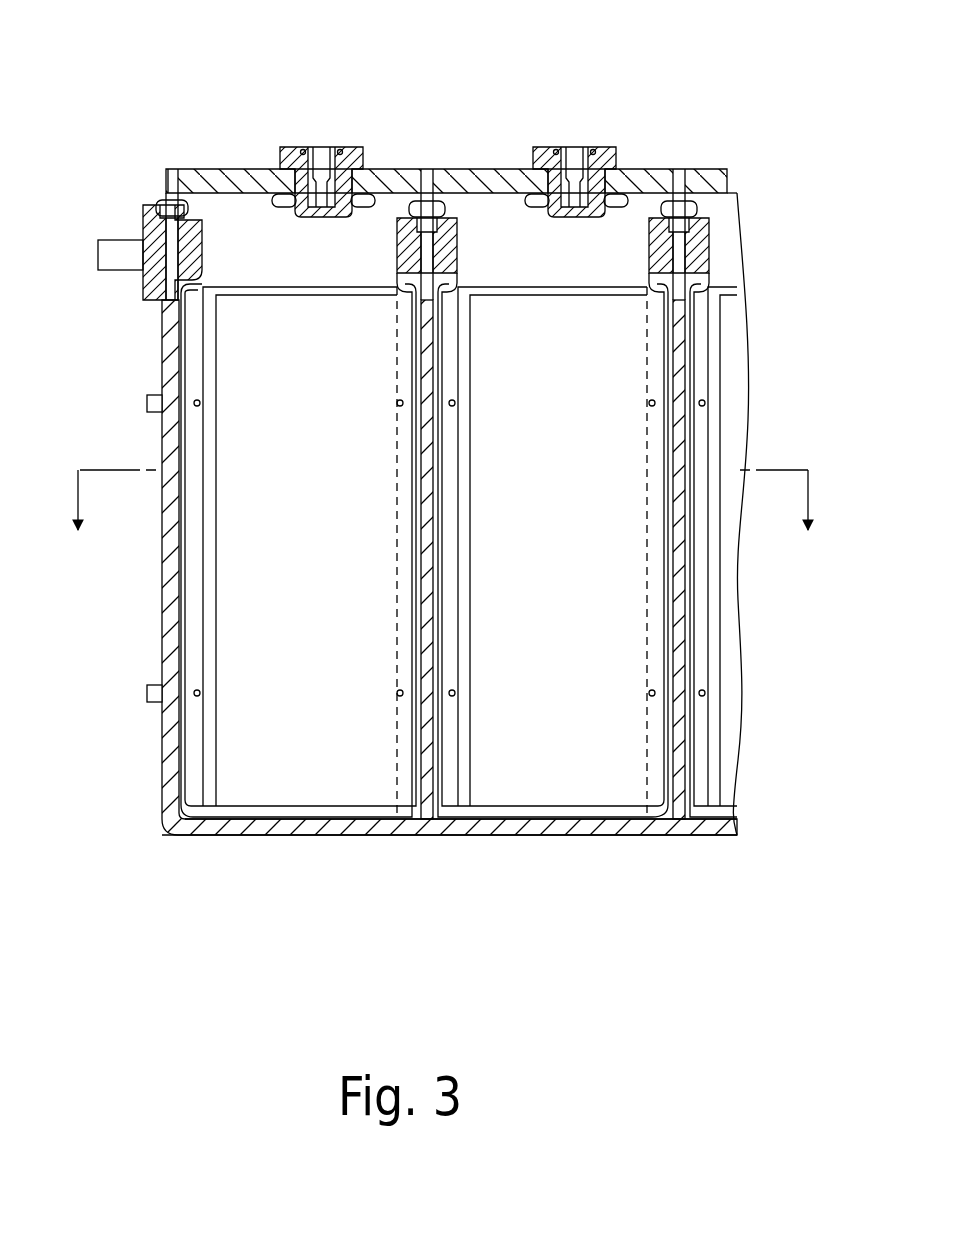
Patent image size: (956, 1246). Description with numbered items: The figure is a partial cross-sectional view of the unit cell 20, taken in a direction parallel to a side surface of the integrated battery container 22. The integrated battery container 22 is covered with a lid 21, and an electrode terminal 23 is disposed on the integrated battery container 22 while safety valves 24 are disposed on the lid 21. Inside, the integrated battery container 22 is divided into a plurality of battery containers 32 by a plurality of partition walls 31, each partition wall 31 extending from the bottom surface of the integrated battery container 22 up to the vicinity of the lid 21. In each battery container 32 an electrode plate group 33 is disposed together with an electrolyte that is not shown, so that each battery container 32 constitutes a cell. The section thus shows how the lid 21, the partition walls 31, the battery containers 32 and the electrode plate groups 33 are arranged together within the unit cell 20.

The unit cell 20 is at (116, 104).
The lid 21 is at (200, 168).
The integrated battery container 22 is at (157, 652).
The electrode terminal 23 is at (112, 248).
The safety valve 24 is at (356, 147).
The partition wall 31 is at (433, 357).
The battery container 32 is at (295, 842).
The electrode plate group 33 is at (288, 545).